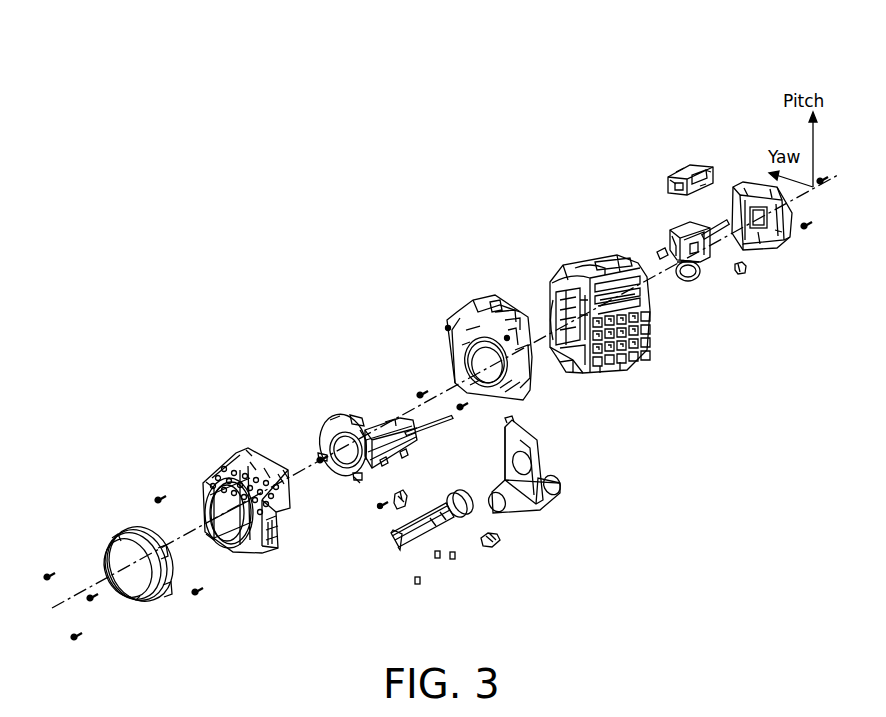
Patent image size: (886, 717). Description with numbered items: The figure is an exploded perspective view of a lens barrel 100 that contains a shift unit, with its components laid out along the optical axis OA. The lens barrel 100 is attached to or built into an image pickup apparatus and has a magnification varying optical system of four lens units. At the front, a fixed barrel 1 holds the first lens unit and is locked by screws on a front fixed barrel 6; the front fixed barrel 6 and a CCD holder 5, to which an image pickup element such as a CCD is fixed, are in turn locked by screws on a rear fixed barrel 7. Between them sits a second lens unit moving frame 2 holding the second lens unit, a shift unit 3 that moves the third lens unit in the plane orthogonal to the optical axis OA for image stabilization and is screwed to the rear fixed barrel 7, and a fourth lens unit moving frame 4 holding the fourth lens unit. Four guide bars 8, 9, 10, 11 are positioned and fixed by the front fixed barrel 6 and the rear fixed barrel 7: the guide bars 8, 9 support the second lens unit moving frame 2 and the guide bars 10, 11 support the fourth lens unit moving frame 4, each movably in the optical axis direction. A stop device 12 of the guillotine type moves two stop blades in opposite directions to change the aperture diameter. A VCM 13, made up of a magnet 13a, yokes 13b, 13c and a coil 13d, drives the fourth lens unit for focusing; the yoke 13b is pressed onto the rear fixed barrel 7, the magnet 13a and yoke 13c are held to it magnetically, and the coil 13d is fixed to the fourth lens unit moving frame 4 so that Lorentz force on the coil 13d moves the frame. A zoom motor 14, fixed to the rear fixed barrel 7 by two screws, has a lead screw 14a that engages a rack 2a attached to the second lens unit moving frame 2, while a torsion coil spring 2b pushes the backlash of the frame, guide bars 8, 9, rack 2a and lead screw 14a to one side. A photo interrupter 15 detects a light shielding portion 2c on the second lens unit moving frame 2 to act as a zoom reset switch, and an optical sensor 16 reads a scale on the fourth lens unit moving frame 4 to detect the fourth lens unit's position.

The lens barrel 100 is at (752, 45).
The optical axis OA is at (70, 600).
The fixed barrel 1 is at (130, 532).
The second lens unit moving frame 2 is at (337, 422).
The rack 2a is at (398, 503).
The torsion coil spring 2b is at (380, 506).
The light shielding portion 2c is at (357, 480).
The shift unit 3 is at (470, 320).
The fourth lens unit moving frame 4 is at (700, 278).
The CCD holder 5 is at (765, 250).
The front fixed barrel 6 is at (236, 468).
The rear fixed barrel 7 is at (565, 277).
The guide bar 8 is at (439, 440).
The guide bar 9 is at (366, 424).
The guide bar 10 is at (670, 253).
The guide bar 11 is at (659, 255).
The stop device 12 is at (538, 445).
The VCM 13 is at (696, 170).
The magnet 13a is at (681, 172).
The yoke 13b is at (672, 181).
The yoke 13c is at (709, 172).
The coil 13d is at (703, 188).
The zoom motor 14 is at (457, 518).
The lead screw 14a is at (418, 546).
The photo interrupter 15 is at (490, 548).
The optical sensor 16 is at (742, 270).